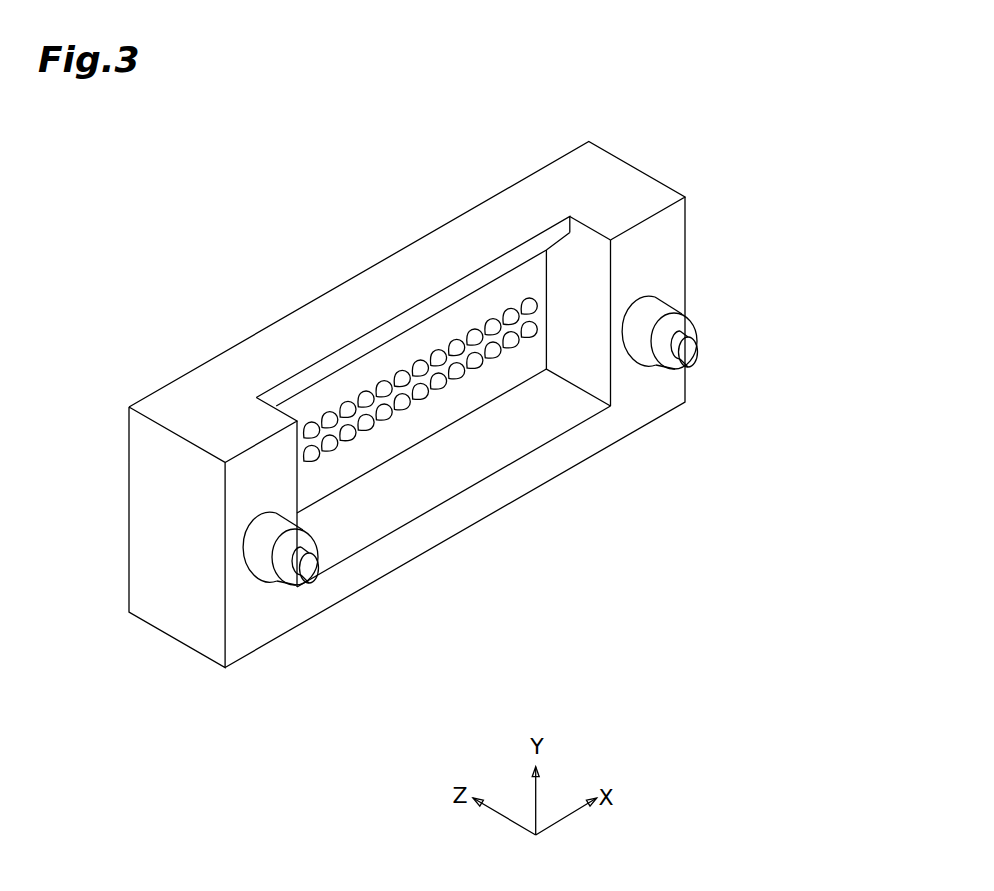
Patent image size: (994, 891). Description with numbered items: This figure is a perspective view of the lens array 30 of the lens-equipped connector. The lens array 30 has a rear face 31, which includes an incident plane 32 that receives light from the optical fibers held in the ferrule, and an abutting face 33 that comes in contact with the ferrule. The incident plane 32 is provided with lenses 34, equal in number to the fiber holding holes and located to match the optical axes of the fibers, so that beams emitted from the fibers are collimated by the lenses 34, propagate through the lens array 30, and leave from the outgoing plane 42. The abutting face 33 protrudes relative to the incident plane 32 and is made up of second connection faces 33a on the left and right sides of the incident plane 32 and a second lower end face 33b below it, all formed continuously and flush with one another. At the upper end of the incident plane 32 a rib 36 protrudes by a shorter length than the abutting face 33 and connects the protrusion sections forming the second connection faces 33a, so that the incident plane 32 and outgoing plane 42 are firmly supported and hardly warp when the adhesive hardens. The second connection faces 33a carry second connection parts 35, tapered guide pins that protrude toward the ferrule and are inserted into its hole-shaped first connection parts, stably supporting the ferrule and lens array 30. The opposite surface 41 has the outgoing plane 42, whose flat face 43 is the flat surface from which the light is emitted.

The lens array 30 is at (305, 258).
The rear face 31 is at (685, 268).
The incident plane 32 is at (512, 285).
The abutting face 33 is at (606, 551).
The second connection faces 33a is at (637, 262).
The second lower end face 33b is at (578, 445).
The lenses 34 is at (405, 378).
The second connection parts 35 is at (312, 565).
The rib 36 is at (462, 292).
The surface 41 is at (167, 365).
The outgoing plane 42 is at (228, 347).
The flat face 43 is at (213, 455).